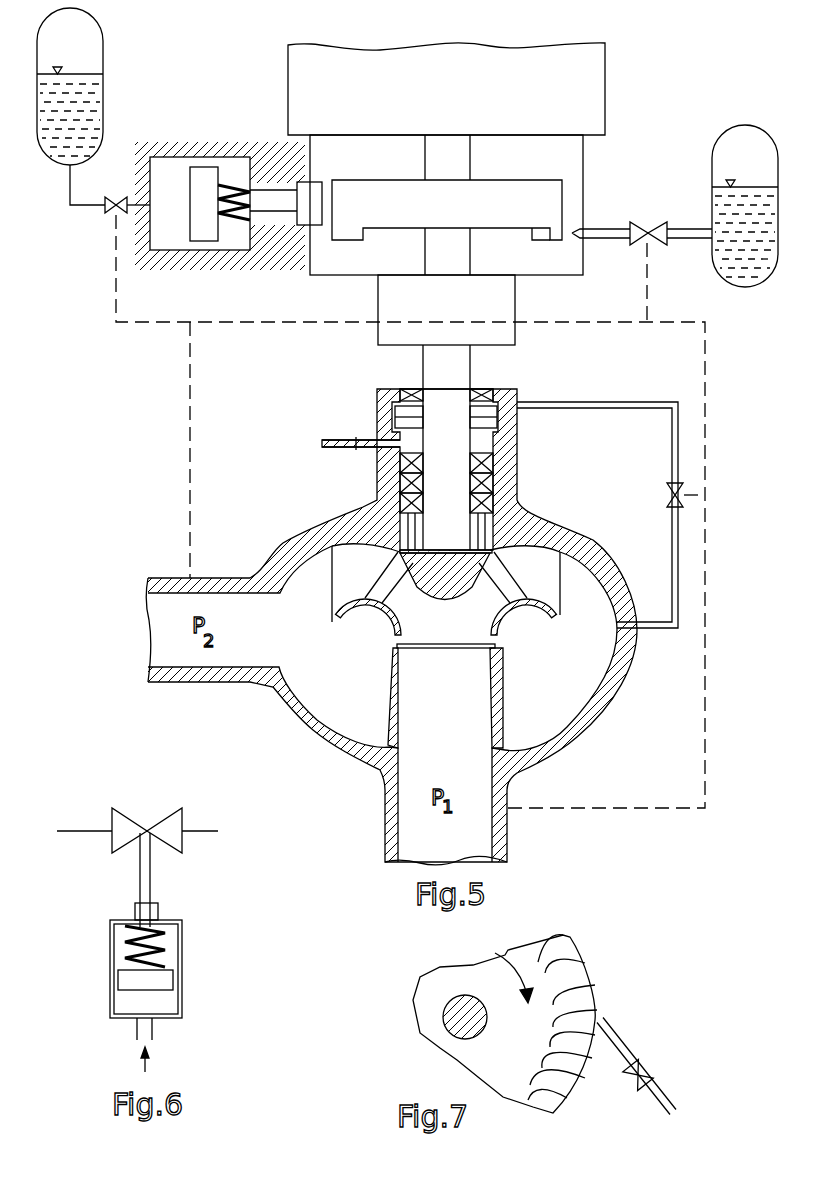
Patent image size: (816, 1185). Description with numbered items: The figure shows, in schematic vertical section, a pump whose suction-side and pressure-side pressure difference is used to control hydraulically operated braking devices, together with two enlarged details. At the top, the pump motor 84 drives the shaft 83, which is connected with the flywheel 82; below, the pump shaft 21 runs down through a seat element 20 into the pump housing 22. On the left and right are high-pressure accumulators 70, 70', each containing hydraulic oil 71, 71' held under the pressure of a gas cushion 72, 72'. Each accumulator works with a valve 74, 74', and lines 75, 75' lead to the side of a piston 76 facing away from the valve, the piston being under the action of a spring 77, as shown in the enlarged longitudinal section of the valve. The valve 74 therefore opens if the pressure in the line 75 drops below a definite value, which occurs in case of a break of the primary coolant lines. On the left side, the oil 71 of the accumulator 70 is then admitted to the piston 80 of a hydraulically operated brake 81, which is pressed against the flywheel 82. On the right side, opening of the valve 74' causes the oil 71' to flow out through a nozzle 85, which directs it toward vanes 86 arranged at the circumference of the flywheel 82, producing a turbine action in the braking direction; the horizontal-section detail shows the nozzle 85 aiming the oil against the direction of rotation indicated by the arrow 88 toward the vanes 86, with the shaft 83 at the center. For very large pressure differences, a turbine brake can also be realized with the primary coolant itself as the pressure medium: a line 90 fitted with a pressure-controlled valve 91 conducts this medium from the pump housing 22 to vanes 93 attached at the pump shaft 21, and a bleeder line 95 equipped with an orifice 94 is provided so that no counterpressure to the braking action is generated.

In FIG. 5, the seat ring 20 is at (507, 618).
In FIG. 5, the pump shaft 21 is at (436, 368).
In FIG. 5, the pump housing 22 is at (610, 690).
In FIG. 5, the high-pressure accumulator 70 is at (71, 106).
In FIG. 5, the oil 71 is at (88, 120).
In FIG. 5, the gas cushion 72 is at (87, 45).
In FIG. 5, the valve 74 is at (127, 192).
In FIG. 6, the valve 74 is at (137, 851).
In FIG. 5, the line 75 is at (392, 511).
In FIG. 6, the line 75 is at (161, 1045).
In FIG. 6, the piston 76 is at (173, 982).
In FIG. 6, the spring 77 is at (163, 941).
In FIG. 5, the piston 80 is at (191, 216).
In FIG. 5, the hydraulically operated brake 81 is at (311, 220).
In FIG. 5, the flywheel 82 is at (343, 190).
In FIG. 5, the shaft 83 is at (462, 165).
In FIG. 7, the shaft 83 is at (482, 1031).
In FIG. 5, the pump motor 84 is at (598, 90).
In FIG. 5, the nozzle 85 is at (590, 228).
In FIG. 7, the nozzle 85 is at (608, 1027).
In FIG. 5, the vanes 86 is at (545, 232).
In FIG. 7, the vanes 86 is at (585, 982).
In FIG. 7, the arrow 88 is at (508, 978).
In FIG. 5, the line 90 is at (672, 553).
In FIG. 5, the valve 91 is at (668, 495).
In FIG. 5, the vanes 93 is at (493, 424).
In FIG. 5, the orifice 94 is at (357, 440).
In FIG. 5, the bleeder line 95 is at (333, 440).
In FIG. 5, the high-pressure accumulator 70' is at (745, 222).
In FIG. 5, the oil 71' is at (722, 225).
In FIG. 5, the gas cushion 72' is at (735, 144).
In FIG. 5, the valve 74' is at (655, 253).
In FIG. 7, the valve 74' is at (651, 1065).
In FIG. 5, the line 75' is at (628, 282).